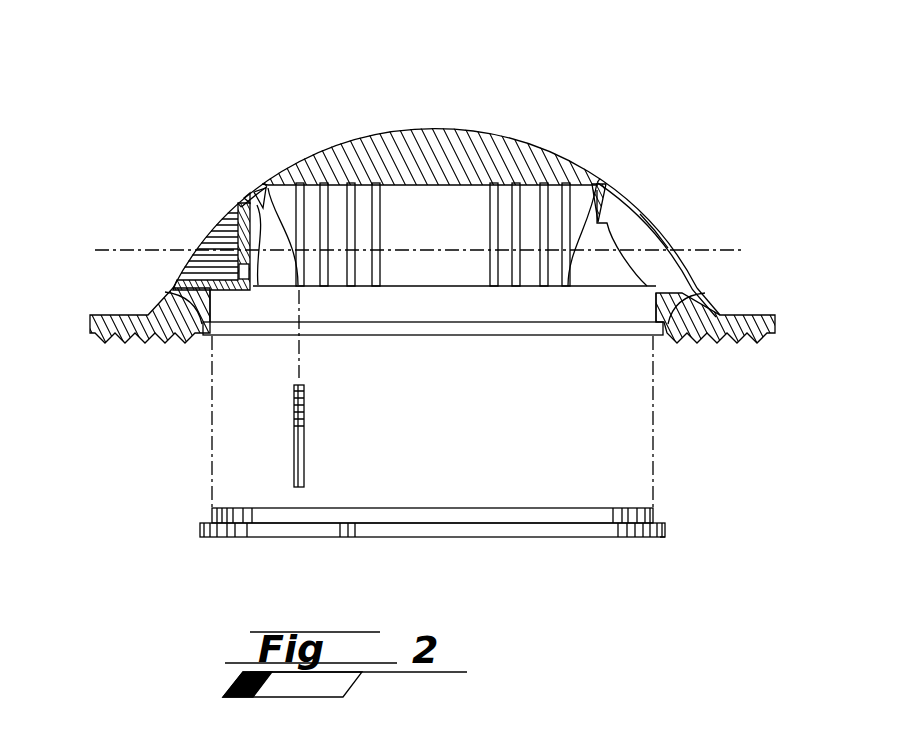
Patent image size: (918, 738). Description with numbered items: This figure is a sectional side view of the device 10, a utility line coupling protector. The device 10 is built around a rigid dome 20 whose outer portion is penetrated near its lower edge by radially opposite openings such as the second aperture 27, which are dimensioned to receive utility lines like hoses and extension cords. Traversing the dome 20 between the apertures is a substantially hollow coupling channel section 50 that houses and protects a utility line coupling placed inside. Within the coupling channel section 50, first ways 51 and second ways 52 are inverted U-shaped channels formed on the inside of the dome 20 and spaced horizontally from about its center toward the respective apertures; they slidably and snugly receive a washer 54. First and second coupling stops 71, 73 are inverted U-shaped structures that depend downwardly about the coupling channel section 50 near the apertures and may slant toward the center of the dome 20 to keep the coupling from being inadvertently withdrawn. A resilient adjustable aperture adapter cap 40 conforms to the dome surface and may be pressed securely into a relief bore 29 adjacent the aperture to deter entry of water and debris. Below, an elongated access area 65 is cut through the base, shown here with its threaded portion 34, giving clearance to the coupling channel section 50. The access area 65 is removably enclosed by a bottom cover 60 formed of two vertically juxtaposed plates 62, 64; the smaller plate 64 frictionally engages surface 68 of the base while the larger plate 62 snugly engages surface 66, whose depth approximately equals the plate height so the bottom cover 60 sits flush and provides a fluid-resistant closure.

The device 10 is at (90, 118).
The dome 20 is at (532, 143).
The second aperture 27 is at (648, 222).
The relief bore 29 is at (657, 229).
The threaded base 34 is at (758, 340).
The adjustable aperture adapter cap 40 is at (246, 184).
The coupling channel section 50 is at (381, 298).
The first ways 51 is at (352, 183).
The second ways 52 is at (530, 182).
The washer 54 is at (305, 450).
The bottom cover 60 is at (672, 545).
The plate 62 is at (553, 537).
The plate 64 is at (655, 512).
The access area 65 is at (240, 337).
The surface 66 is at (163, 297).
The surface 68 is at (200, 276).
The first coupling stop 71 is at (262, 184).
The second coupling stop 73 is at (600, 196).